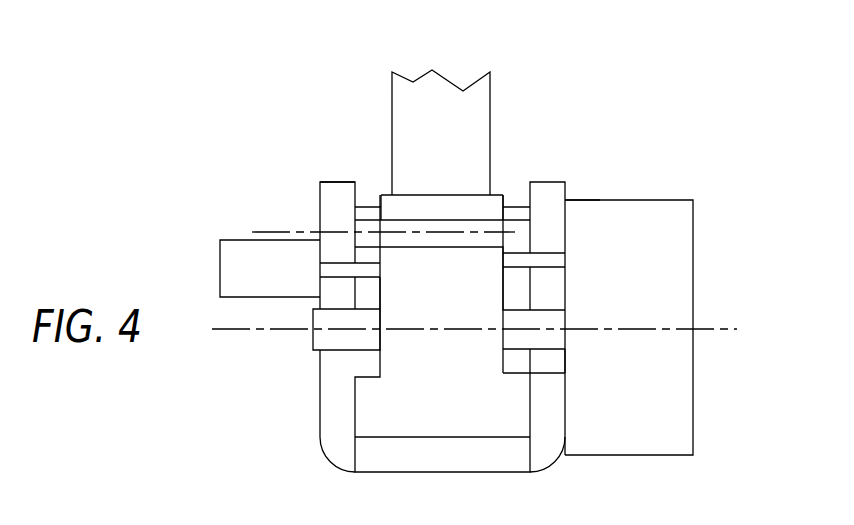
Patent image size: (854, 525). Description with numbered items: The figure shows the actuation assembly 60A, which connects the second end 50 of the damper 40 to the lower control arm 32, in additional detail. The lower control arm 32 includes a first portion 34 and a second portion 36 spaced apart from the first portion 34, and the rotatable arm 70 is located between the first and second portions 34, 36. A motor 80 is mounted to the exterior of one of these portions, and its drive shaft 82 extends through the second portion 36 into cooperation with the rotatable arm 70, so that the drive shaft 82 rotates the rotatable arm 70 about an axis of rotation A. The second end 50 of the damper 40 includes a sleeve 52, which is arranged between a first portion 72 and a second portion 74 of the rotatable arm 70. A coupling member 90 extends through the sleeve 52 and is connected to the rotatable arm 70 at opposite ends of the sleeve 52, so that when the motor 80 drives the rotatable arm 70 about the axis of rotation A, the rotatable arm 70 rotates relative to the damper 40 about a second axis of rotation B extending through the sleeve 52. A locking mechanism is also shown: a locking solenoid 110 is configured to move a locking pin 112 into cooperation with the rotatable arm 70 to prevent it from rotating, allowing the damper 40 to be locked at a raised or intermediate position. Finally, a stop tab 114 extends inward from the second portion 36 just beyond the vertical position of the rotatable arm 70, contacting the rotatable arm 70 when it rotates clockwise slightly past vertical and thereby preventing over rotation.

The damper 40 is at (432, 110).
The second end 50 is at (386, 193).
The sleeve 52 is at (440, 217).
The coupling member 90 is at (514, 217).
The first portion 34 is at (340, 182).
The lower control arm 32 is at (550, 182).
The second portion 36 is at (565, 183).
The locking pin 112 is at (373, 262).
The stop tab 114 is at (545, 253).
The locking solenoid 110 is at (220, 262).
The first portion 72 is at (363, 293).
The second portion 74 is at (518, 287).
The rotatable arm 70 is at (378, 362).
The motor 80 is at (695, 395).
The drive shaft 82 is at (515, 350).
The actuation assembly 60A is at (273, 105).
The axis of rotation A is at (233, 331).
The axis of rotation B is at (270, 232).